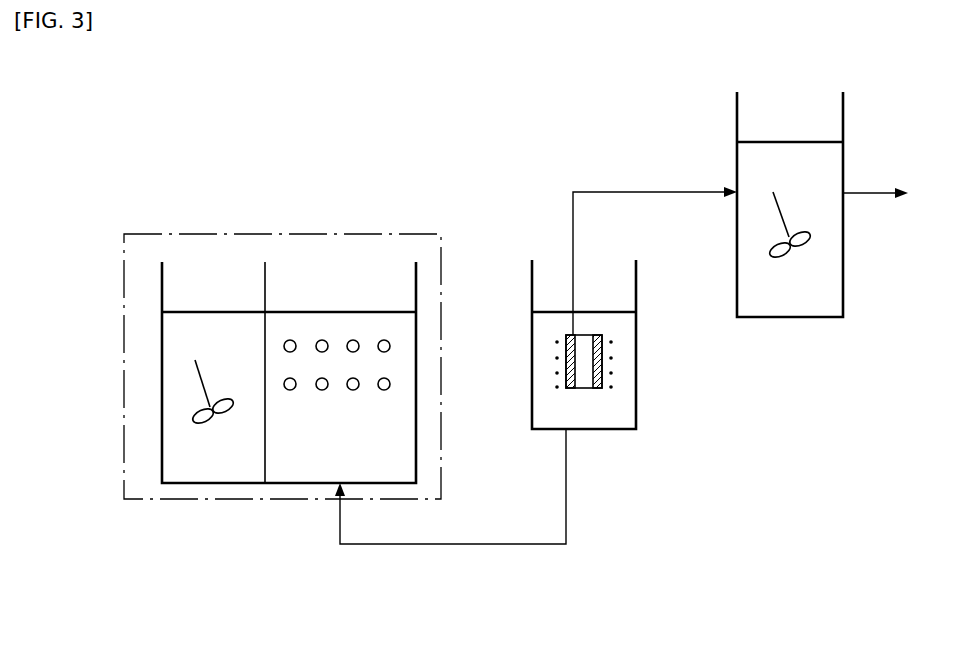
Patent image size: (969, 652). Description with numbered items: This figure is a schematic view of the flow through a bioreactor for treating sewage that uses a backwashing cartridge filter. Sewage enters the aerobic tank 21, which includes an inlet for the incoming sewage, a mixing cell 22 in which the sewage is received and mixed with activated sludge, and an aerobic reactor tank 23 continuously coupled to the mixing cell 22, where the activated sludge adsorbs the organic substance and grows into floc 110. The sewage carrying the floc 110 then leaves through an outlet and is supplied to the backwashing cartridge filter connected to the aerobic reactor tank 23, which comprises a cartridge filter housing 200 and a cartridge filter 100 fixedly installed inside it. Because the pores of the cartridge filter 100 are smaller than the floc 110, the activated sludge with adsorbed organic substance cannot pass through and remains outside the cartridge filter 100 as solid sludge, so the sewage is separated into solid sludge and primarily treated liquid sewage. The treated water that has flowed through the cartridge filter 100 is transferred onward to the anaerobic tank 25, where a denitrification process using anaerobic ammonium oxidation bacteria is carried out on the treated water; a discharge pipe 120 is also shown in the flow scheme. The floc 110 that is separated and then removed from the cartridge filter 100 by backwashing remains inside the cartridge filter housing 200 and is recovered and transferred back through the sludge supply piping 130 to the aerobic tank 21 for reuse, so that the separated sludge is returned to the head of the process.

The aerobic tank 21 is at (283, 233).
The mixing cell 22 is at (193, 463).
The aerobic reactor tank 23 is at (405, 415).
The anaerobic tank 25 is at (826, 160).
The cartridge filter 100 is at (570, 377).
The floc 110 is at (613, 342).
The discharge pipe 120 is at (658, 192).
The sludge supply piping 130 is at (450, 544).
The cartridge filter housing 200 is at (636, 370).